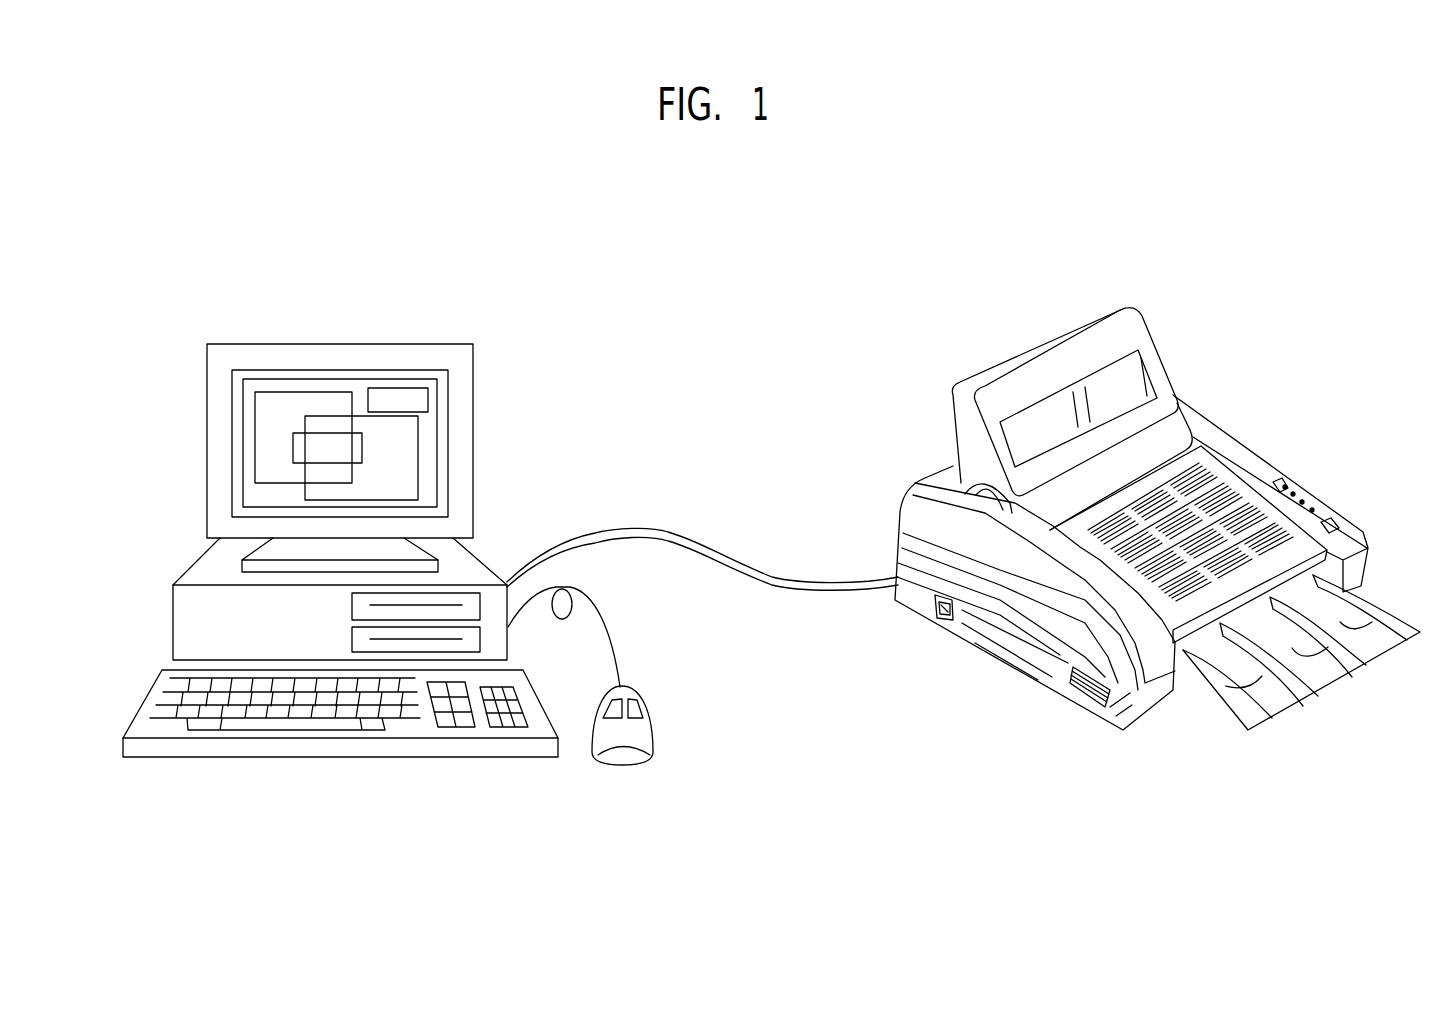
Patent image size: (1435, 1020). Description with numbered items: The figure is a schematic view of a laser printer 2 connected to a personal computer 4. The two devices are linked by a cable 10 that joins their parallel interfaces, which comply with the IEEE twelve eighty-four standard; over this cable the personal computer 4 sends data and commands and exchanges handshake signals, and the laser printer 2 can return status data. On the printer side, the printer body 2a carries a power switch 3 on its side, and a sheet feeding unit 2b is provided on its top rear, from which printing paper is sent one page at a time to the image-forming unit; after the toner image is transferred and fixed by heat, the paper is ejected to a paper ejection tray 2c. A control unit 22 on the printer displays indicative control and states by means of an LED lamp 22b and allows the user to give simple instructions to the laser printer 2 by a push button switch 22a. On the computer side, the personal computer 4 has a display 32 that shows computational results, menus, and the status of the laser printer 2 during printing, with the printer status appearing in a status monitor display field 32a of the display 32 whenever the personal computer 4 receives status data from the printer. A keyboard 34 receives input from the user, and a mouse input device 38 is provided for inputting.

The laser printer 2 is at (968, 285).
The printer body 2a is at (1003, 628).
The sheet feeding unit 2b is at (1100, 343).
The paper ejection tray 2c is at (1340, 668).
The power switch 3 is at (920, 637).
The personal computer 4 is at (480, 262).
The cable 10 is at (722, 550).
The control unit 22 is at (1276, 484).
The push button switch 22a is at (1327, 523).
The LED lamp 22b is at (1293, 497).
The display 32 is at (473, 410).
The status monitor display field 32a is at (305, 447).
The keyboard 34 is at (470, 748).
The mouse input device 38 is at (643, 700).